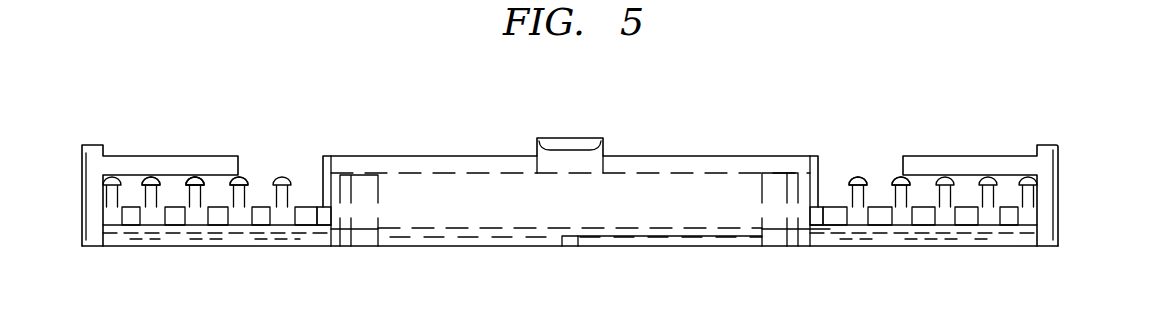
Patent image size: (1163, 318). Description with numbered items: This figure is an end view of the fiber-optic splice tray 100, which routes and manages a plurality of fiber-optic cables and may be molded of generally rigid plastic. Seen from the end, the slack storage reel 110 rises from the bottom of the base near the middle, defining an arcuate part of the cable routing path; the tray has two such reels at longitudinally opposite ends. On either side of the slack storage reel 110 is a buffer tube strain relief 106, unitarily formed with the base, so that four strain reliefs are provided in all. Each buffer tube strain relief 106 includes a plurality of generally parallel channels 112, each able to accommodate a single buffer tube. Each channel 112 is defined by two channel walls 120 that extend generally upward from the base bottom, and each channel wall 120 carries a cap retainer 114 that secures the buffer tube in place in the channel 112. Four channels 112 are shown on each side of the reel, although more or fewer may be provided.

The splice tray 100 is at (1074, 128).
The buffer tube strain relief 106 is at (289, 129).
The slack storage reel 110 is at (653, 153).
The channel 112 is at (172, 198).
The cap retainer 114 is at (240, 178).
The channel wall 120 is at (190, 193).